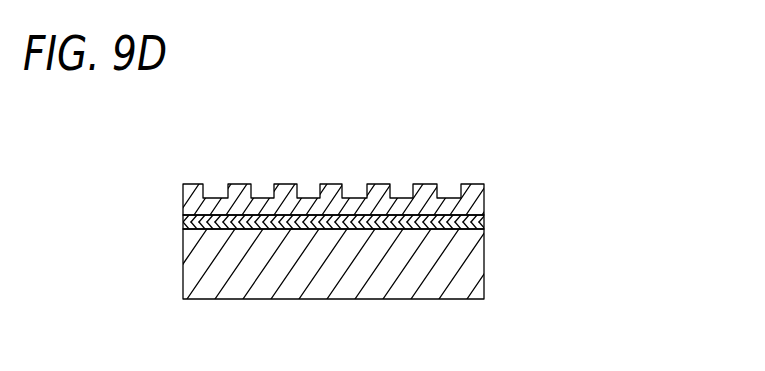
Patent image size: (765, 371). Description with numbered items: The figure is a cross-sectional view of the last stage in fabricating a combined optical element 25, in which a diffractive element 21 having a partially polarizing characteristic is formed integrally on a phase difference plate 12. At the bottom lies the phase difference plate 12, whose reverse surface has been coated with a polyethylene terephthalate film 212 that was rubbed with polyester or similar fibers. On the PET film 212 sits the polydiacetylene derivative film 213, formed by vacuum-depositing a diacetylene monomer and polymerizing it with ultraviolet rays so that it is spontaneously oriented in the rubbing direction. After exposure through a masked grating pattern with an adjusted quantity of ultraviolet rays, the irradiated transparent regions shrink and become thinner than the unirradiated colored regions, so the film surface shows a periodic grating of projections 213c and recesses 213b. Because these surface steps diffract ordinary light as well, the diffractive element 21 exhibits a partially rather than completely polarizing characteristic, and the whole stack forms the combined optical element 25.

The projections 213c is at (228, 185).
The recesses 213b is at (208, 196).
The polydiacetylene derivative film 213 is at (368, 171).
The diffractive element 21 is at (368, 171).
The polyethylene terephthalate film 212 is at (477, 223).
The phase difference plate 12 is at (478, 262).
The combined optical element 25 is at (395, 215).